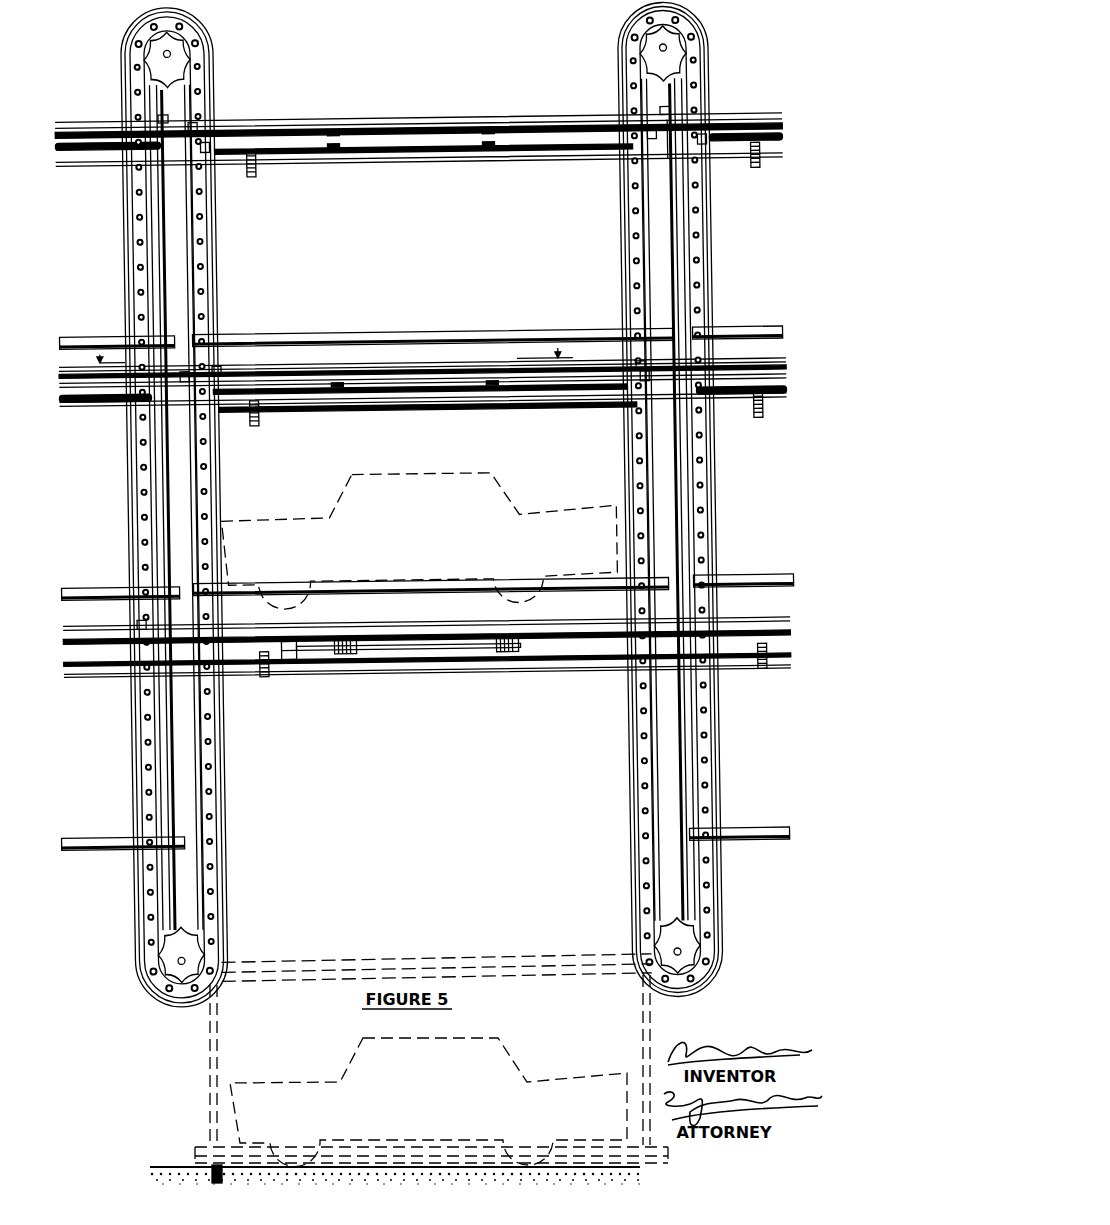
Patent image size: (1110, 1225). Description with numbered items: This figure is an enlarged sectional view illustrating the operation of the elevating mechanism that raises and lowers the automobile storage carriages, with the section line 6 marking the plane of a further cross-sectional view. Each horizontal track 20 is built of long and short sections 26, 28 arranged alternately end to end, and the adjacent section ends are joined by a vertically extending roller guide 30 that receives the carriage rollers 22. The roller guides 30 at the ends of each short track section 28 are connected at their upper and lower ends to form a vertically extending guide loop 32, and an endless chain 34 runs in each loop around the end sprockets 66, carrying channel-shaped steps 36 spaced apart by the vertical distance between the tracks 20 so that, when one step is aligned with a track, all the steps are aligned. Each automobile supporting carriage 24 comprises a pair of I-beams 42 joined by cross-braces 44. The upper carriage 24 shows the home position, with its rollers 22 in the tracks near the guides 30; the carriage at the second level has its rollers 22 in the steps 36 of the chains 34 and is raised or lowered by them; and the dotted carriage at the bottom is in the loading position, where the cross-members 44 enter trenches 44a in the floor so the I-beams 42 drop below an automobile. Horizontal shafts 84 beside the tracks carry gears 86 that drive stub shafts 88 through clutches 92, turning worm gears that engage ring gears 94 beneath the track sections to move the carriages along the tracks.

The section line 6 is at (334, 357).
The track 20 is at (291, 118).
The roller 22 is at (218, 122).
The automobile supporting carriage 24 is at (369, 332).
The long track section 26 is at (353, 117).
The short track section 28 is at (171, 113).
The roller guide 30 is at (631, 253).
The guide loop 32 is at (219, 52).
The endless chain 34 is at (206, 220).
The step 36 is at (201, 122).
The I-beam 42 is at (400, 1155).
The cross-brace 44 is at (200, 1168).
The trench 44a is at (223, 1170).
The chain sprocket 66 is at (172, 40).
The horizontal shaft 84 is at (437, 149).
The gear 86 is at (263, 165).
The stub shaft 88 is at (431, 647).
The clutch 92 is at (289, 657).
The ring gear 94 is at (341, 654).